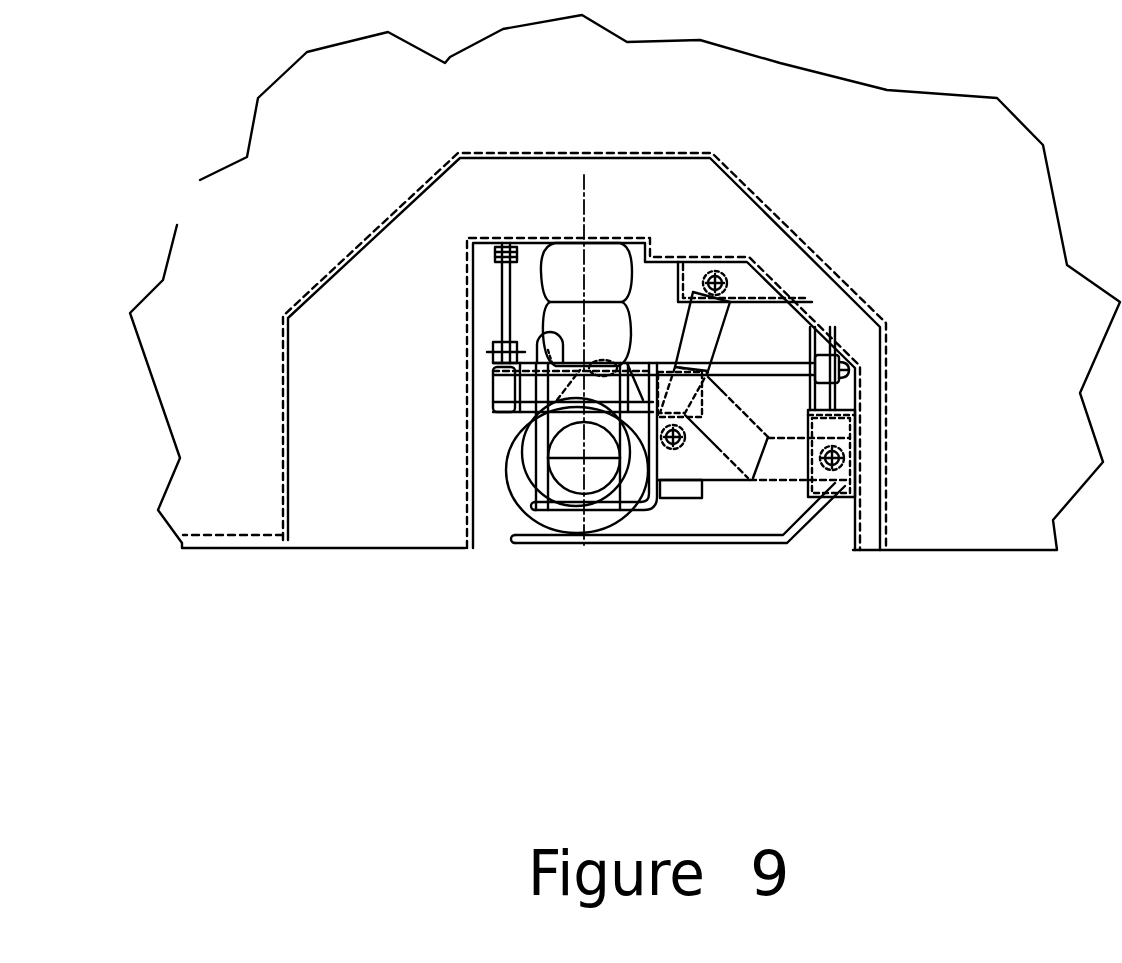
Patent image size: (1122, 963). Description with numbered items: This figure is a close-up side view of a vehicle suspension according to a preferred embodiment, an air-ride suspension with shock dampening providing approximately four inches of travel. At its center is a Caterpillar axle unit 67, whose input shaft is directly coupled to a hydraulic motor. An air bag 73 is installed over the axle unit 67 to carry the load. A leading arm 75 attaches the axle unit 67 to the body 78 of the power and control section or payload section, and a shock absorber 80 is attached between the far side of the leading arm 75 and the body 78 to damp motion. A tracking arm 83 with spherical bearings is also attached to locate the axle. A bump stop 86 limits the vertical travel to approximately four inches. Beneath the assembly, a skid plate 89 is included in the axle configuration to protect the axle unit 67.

The body 78 is at (962, 181).
The tracking arm 83 is at (505, 313).
The bump stop 86 is at (542, 330).
The air bag 73 is at (605, 283).
The shock absorber 80 is at (712, 335).
The leading arm 75 is at (727, 437).
The axle unit 67 is at (515, 495).
The skid plate 89 is at (683, 538).